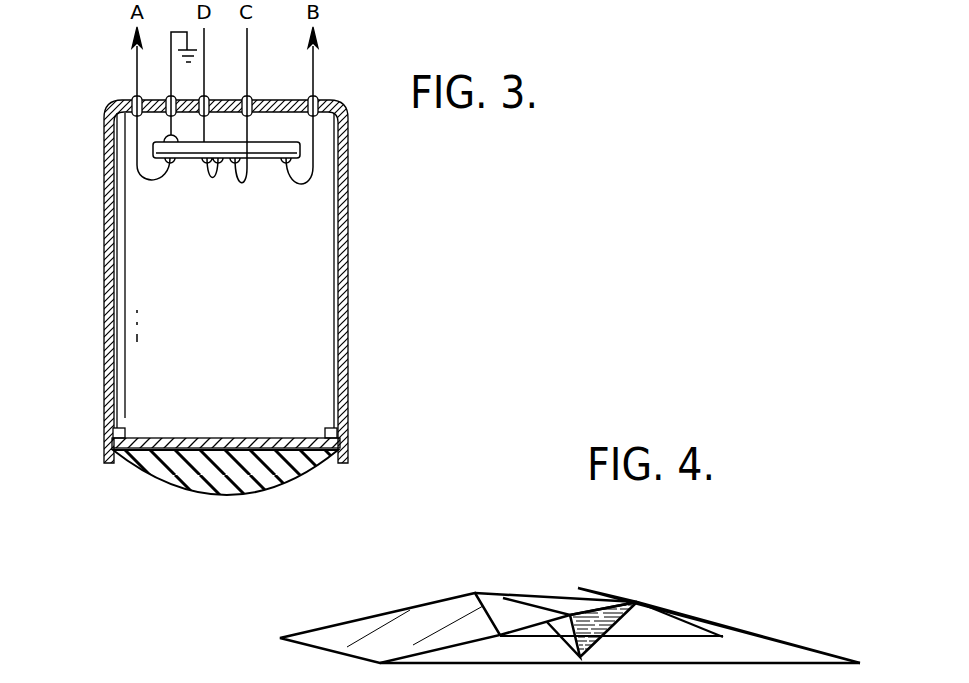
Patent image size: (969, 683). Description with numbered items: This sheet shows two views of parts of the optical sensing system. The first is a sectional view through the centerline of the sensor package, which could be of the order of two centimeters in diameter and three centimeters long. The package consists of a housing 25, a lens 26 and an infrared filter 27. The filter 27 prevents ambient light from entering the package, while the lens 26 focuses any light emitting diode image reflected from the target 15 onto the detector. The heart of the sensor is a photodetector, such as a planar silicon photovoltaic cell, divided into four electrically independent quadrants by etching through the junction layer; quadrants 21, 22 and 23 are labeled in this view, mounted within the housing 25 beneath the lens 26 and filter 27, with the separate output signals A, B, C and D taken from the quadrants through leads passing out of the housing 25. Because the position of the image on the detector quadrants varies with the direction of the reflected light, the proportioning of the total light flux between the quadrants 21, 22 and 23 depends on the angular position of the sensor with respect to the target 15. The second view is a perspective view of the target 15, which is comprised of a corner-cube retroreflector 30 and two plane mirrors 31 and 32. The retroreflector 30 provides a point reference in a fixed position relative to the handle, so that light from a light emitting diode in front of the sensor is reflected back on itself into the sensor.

In FIG. 4, the target 15 is at (631, 562).
In FIG. 3, the quadrant 21 is at (187, 156).
In FIG. 3, the quadrant 22 is at (285, 163).
In FIG. 3, the quadrant 23 is at (235, 163).
In FIG. 3, the housing 25 is at (104, 201).
In FIG. 3, the lens 26 is at (173, 487).
In FIG. 3, the infrared filter 27 is at (181, 438).
In FIG. 4, the corner-cube retroreflector 30 is at (532, 584).
In FIG. 4, the plane mirror 31 is at (410, 612).
In FIG. 4, the plane mirror 32 is at (712, 614).